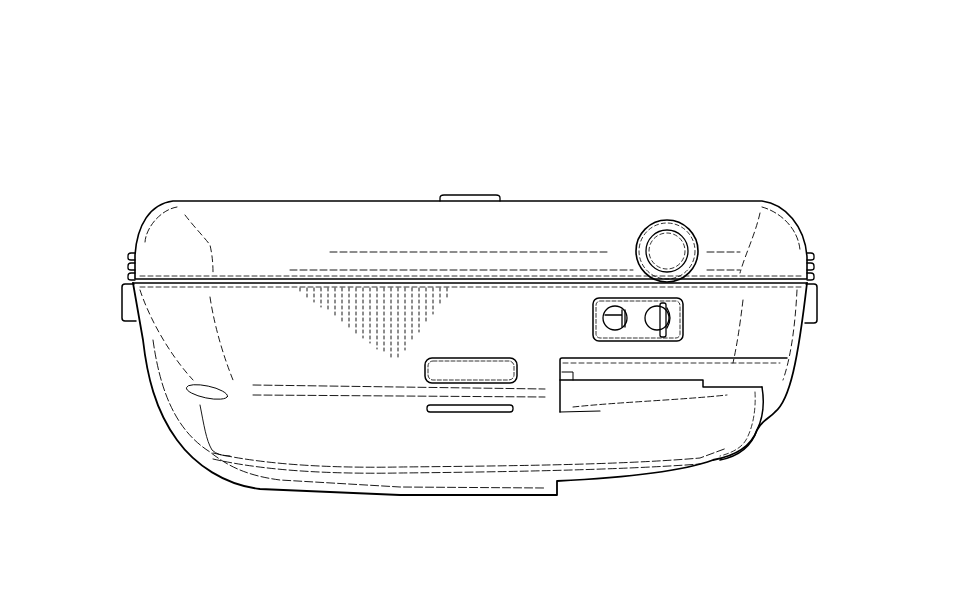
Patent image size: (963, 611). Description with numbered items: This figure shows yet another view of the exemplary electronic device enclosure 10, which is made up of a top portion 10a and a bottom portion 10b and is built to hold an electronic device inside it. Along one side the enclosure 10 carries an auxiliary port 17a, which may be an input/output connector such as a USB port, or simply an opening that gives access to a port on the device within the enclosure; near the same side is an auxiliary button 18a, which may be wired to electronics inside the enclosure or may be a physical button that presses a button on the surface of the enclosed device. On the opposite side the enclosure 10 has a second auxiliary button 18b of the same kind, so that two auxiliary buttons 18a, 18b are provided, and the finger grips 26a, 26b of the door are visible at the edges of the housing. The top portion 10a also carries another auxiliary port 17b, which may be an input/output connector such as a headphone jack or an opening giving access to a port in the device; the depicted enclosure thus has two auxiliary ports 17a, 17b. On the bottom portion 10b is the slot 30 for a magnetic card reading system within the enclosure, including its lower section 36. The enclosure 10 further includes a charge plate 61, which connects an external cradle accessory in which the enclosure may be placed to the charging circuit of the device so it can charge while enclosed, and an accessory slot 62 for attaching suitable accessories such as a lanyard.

The enclosure 10 is at (502, 119).
The top portion 10a is at (163, 233).
The bottom portion 10b is at (177, 350).
The auxiliary port 17a is at (813, 324).
The auxiliary port 17b is at (668, 250).
The auxiliary button 18a is at (817, 300).
The auxiliary button 18b is at (122, 300).
The finger grip 26a is at (813, 261).
The finger grip 26b is at (127, 265).
The slot 30 is at (758, 428).
The lower section 36 is at (667, 392).
The charge plate 61 is at (676, 326).
The accessory slot 62 is at (497, 378).